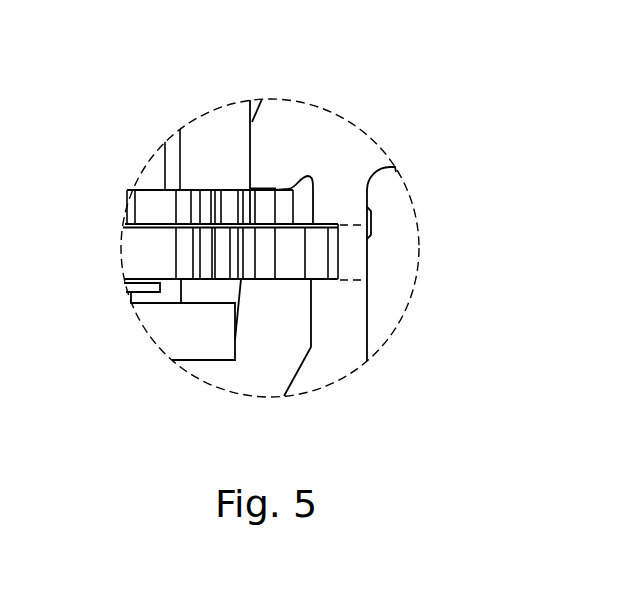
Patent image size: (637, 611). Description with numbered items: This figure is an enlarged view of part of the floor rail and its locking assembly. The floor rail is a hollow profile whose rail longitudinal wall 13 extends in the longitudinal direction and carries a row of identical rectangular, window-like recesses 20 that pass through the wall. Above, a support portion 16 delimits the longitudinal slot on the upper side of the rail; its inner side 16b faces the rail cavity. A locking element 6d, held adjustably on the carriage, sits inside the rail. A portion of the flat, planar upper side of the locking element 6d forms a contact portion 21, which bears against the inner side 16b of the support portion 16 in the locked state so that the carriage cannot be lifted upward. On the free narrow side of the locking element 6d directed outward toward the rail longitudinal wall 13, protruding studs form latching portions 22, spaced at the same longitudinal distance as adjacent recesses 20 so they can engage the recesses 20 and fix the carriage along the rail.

The support portion 16 is at (292, 110).
The inner side of support portion 16b is at (267, 185).
The contact portion 21 is at (265, 211).
The window-like recess 20 is at (368, 255).
The rail longitudinal wall 13 is at (350, 295).
The locking element 6d is at (255, 289).
The latching portion 22 is at (318, 264).